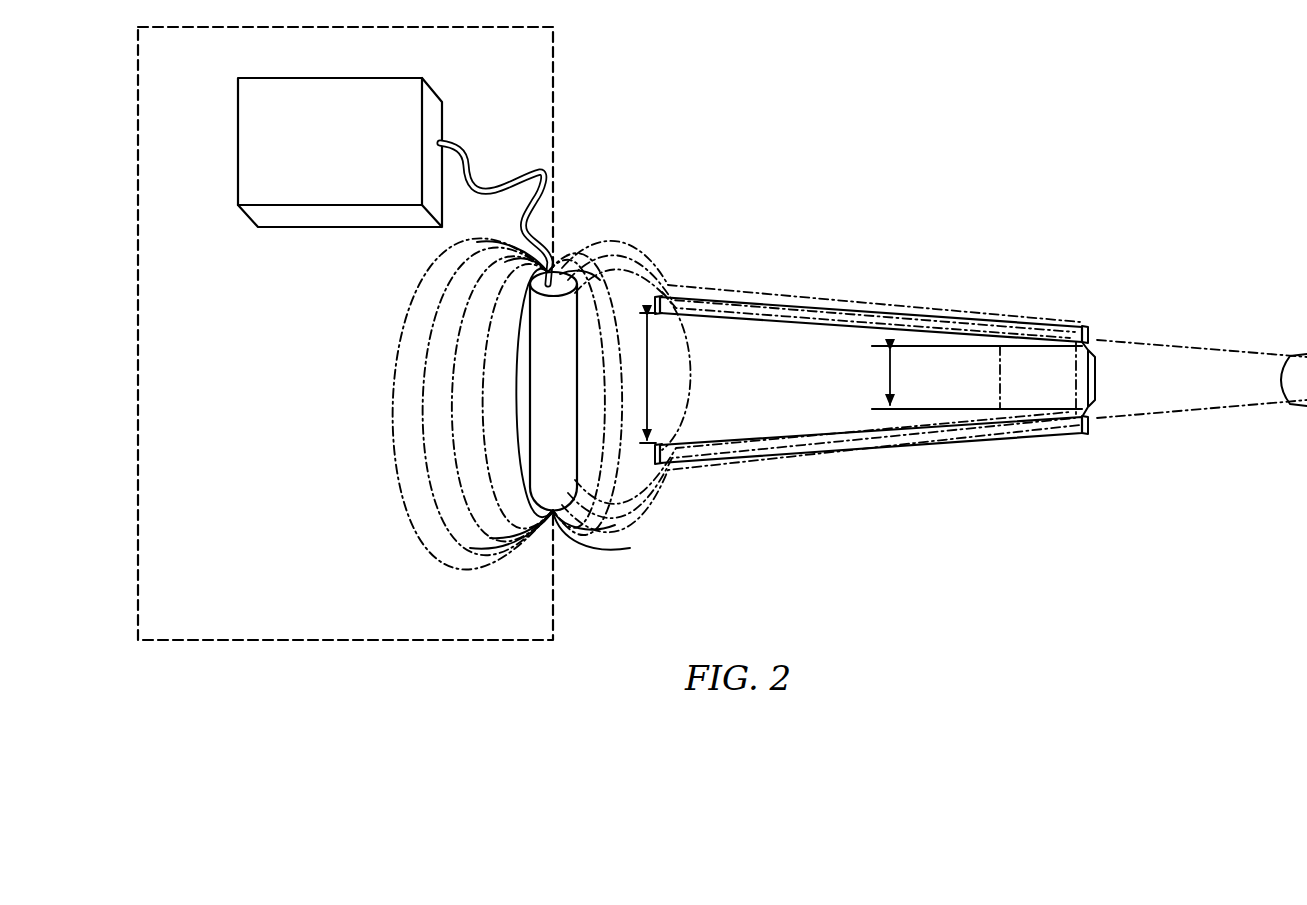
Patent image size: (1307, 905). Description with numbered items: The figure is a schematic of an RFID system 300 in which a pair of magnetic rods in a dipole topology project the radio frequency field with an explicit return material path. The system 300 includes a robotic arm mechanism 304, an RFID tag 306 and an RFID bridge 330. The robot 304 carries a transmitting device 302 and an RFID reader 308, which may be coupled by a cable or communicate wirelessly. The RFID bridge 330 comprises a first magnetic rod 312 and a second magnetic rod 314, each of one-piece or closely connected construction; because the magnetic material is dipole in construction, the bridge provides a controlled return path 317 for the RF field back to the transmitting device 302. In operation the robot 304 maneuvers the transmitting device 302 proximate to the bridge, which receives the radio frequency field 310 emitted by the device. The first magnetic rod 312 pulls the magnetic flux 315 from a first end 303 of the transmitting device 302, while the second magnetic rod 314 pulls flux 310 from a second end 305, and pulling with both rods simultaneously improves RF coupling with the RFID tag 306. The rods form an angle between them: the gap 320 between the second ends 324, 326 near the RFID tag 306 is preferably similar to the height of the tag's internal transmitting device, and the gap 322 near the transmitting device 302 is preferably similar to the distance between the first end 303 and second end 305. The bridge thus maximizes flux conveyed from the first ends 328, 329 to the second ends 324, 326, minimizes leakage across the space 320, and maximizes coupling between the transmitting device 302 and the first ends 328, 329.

The RFID system 300 is at (755, 87).
The transmitting device 302 is at (543, 468).
The first end 303 is at (575, 320).
The robotic arm mechanism 304 is at (136, 146).
The second end 305 is at (567, 487).
The RFID tag 306 is at (1097, 378).
The RFID reader 308 is at (240, 192).
The RF field 310 is at (376, 374).
The first magnetic rod 312 is at (868, 316).
The second magnetic rod 314 is at (840, 440).
The magnetic flux 315 is at (667, 261).
The controlled return path 317 is at (657, 541).
The gap 320 is at (888, 378).
The gap 322 is at (647, 365).
The second end 324 is at (1055, 325).
The second end 326 is at (1056, 434).
The first end 328 is at (676, 305).
The first end 329 is at (673, 456).
The RFID bridge 330 is at (873, 218).